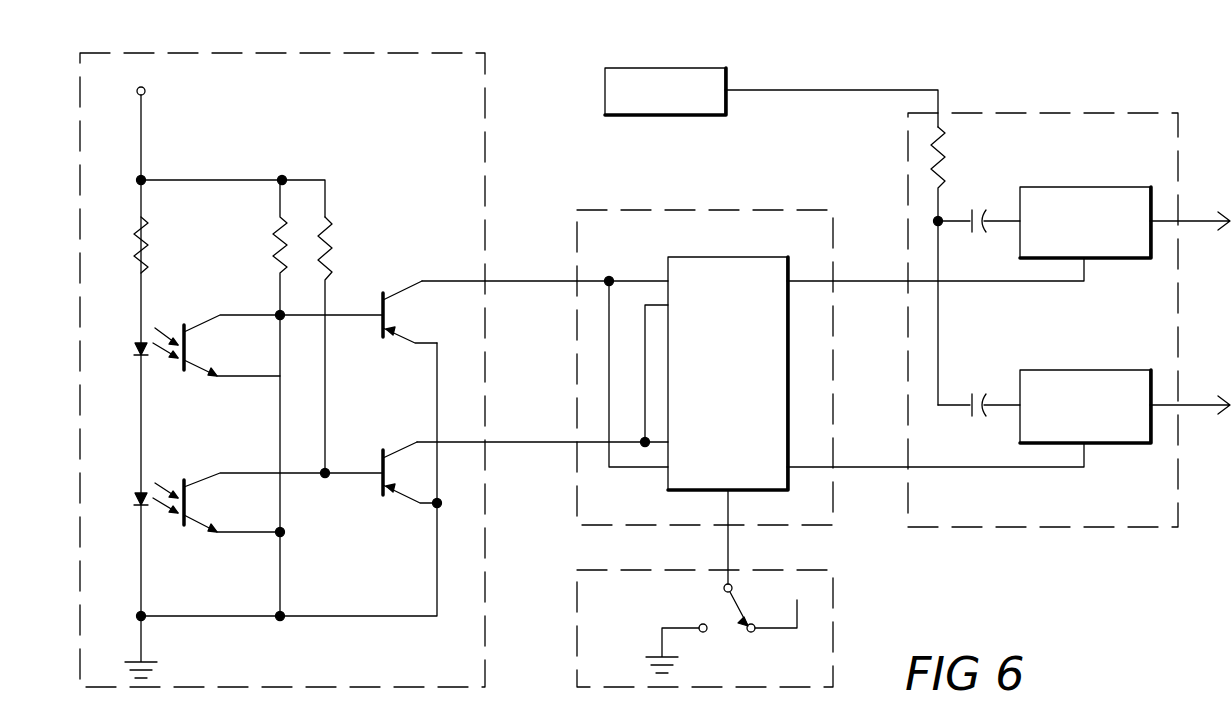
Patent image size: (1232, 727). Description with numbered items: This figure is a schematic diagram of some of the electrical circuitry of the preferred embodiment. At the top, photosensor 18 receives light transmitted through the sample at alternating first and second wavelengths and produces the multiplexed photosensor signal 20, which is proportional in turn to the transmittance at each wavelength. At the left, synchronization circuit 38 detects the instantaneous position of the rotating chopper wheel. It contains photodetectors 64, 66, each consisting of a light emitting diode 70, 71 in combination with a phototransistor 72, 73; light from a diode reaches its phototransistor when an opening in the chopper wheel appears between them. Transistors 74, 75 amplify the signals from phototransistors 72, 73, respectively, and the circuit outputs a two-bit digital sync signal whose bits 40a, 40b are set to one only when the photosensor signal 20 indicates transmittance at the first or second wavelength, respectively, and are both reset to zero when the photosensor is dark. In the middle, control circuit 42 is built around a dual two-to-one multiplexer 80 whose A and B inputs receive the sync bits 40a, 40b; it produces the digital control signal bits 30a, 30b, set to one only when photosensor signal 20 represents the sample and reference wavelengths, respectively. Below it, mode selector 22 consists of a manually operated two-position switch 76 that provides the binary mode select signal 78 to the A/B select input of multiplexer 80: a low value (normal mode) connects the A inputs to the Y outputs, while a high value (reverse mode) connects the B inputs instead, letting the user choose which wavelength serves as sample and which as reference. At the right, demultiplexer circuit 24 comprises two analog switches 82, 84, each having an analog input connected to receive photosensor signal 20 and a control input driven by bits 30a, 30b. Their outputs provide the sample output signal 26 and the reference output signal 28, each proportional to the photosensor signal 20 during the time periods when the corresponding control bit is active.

The photosensor 18 is at (655, 68).
The photosensor signal 20 is at (880, 90).
The mode selector 22 is at (593, 570).
The demultiplexer circuit 24 is at (1045, 113).
The sample output signal 26 is at (1190, 221).
The reference output signal 28 is at (1188, 405).
The first control signal bit 30a is at (838, 282).
The second control signal bit 30b is at (840, 468).
The synchronization circuit 38 is at (197, 53).
The first sync signal bit 40a is at (500, 281).
The second sync signal bit 40b is at (495, 442).
The control circuit 42 is at (612, 210).
The first photodetector 64 is at (168, 302).
The second photodetector 66 is at (167, 468).
The light emitting diode 70 is at (136, 345).
The light emitting diode 71 is at (136, 493).
The phototransistor 72 is at (190, 342).
The phototransistor 73 is at (190, 505).
The transistor 74 is at (400, 287).
The transistor 75 is at (398, 448).
The two-position switch 76 is at (718, 612).
The mode select signal 78 is at (728, 548).
The dual two-to-one multiplexer 80 is at (705, 257).
The analog switch 82 is at (1055, 187).
The analog switch 84 is at (1055, 370).